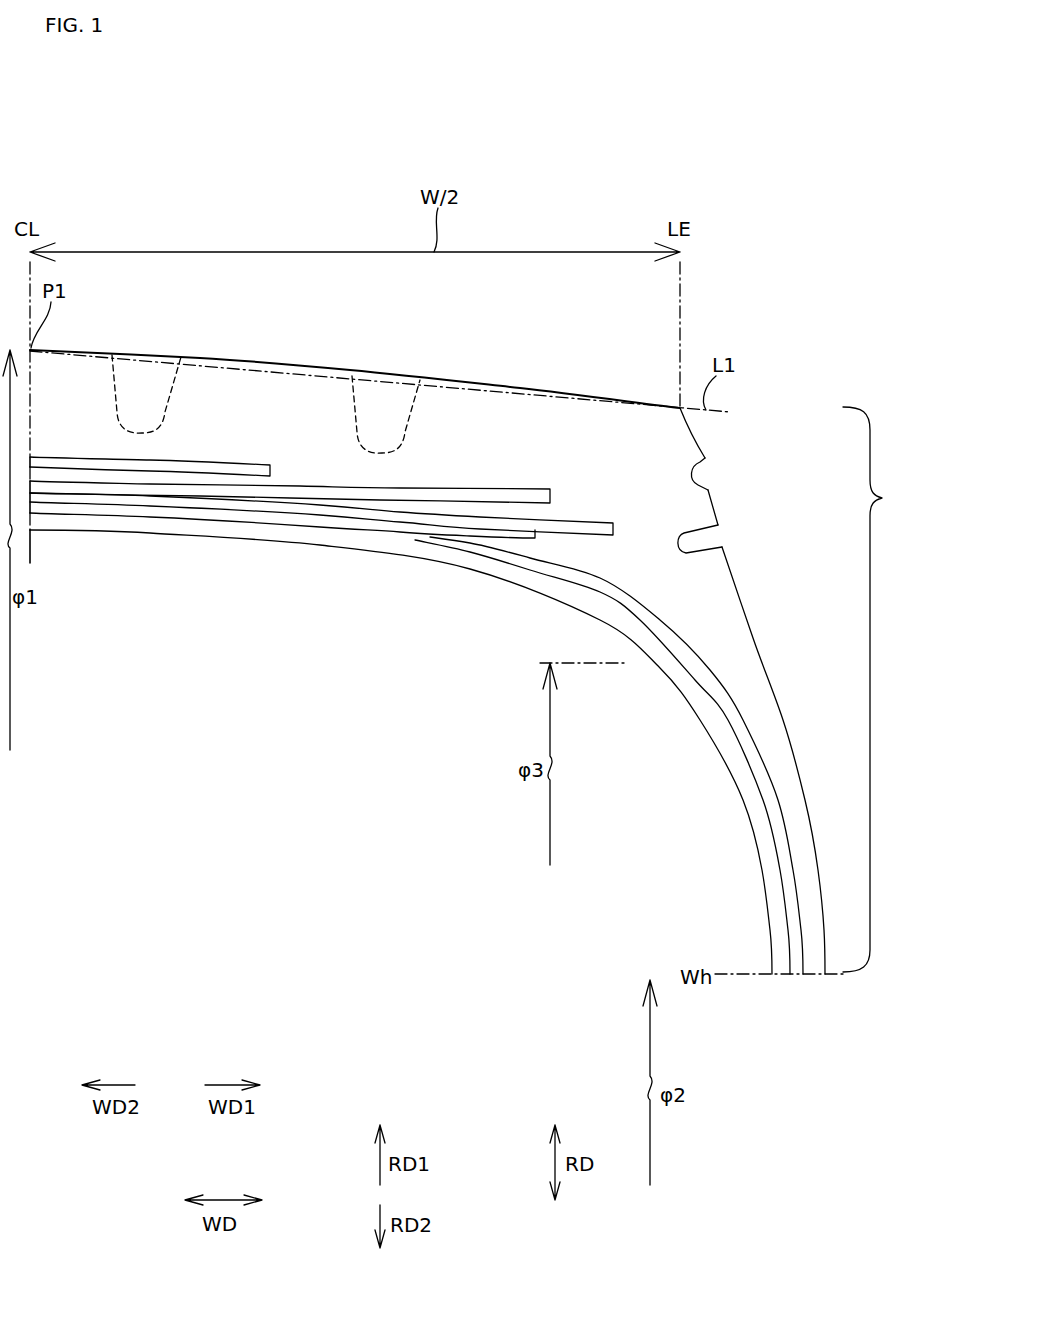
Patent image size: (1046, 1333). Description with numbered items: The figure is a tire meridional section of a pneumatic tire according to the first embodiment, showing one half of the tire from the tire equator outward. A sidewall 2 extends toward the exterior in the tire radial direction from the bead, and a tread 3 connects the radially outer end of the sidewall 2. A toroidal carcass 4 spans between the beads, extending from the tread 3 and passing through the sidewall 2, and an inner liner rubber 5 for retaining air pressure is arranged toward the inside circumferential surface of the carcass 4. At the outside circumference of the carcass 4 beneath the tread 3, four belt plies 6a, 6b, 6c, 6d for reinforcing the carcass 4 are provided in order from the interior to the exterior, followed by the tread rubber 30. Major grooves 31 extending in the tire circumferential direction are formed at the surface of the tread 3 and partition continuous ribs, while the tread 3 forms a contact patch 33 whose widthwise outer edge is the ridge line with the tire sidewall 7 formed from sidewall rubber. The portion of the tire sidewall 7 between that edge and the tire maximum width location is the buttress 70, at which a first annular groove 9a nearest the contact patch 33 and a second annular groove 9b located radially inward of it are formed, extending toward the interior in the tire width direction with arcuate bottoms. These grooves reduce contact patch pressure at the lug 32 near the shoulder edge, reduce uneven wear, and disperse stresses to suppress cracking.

The sidewall 2 is at (822, 729).
The tread 3 is at (257, 322).
The carcass 4 is at (708, 677).
The inner liner rubber 5 is at (734, 772).
The belt ply 6a is at (452, 526).
The belt ply 6b is at (576, 522).
The belt ply 6c is at (475, 497).
The belt ply 6d is at (214, 464).
The tire sidewall 7 is at (757, 643).
The first annular groove 9a is at (700, 470).
The second annular groove 9b is at (709, 538).
The tread rubber 30 is at (485, 402).
The major groove 31 is at (155, 403).
The lug 32 is at (77, 372).
The contact patch 33 is at (191, 252).
The buttress 70 is at (884, 689).